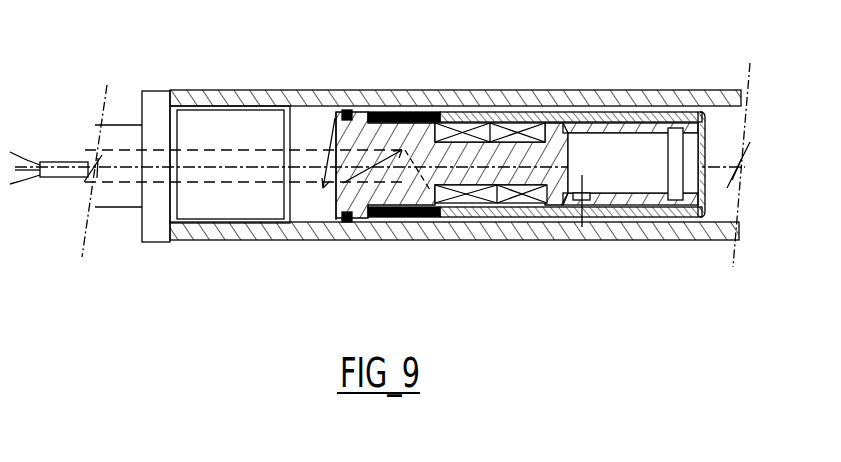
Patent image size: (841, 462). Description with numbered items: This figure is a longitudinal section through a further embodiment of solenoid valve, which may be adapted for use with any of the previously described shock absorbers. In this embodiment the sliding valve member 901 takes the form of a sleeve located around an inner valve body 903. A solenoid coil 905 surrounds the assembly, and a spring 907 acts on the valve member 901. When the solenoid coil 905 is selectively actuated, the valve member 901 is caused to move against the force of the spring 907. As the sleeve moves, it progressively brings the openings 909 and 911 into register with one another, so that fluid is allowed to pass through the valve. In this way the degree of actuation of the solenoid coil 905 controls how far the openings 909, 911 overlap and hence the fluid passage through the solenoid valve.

The sliding valve member 901 is at (615, 115).
The inner valve body 903 is at (492, 172).
The solenoid coil 905 is at (495, 122).
The spring 907 is at (397, 210).
The opening 909 is at (588, 192).
The opening 911 is at (630, 210).